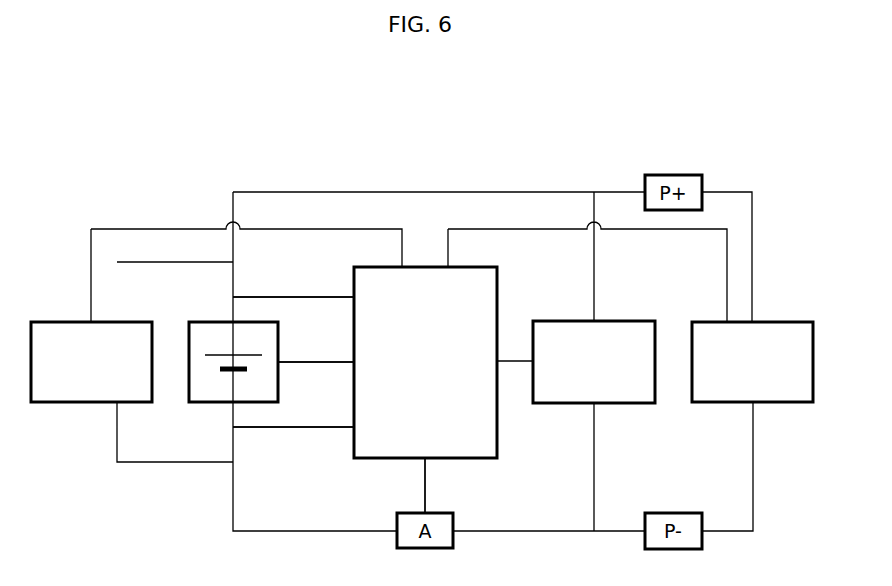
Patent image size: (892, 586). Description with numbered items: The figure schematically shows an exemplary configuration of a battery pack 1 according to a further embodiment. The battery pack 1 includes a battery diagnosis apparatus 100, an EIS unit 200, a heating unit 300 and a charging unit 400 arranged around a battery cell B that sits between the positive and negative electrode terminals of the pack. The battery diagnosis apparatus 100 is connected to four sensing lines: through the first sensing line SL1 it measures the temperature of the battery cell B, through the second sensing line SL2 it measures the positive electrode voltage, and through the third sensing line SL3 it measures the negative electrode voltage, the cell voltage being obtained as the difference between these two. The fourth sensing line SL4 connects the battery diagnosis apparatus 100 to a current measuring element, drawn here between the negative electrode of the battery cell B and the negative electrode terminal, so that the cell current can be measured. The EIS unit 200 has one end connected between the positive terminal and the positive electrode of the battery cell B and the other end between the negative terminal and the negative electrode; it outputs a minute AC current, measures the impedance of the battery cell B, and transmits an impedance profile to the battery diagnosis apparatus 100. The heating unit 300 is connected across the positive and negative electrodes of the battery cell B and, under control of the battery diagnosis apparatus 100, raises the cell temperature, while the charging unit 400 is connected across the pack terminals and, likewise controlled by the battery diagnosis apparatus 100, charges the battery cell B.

The battery pack 1 is at (187, 126).
The battery diagnosis apparatus 100 is at (467, 267).
The EIS unit 200 is at (607, 322).
The heating unit 300 is at (79, 322).
The charging unit 400 is at (766, 322).
The battery cell B is at (222, 322).
The first sensing line SL1 is at (316, 349).
The second sensing line SL2 is at (293, 284).
The third sensing line SL3 is at (293, 414).
The fourth sensing line SL4 is at (447, 485).